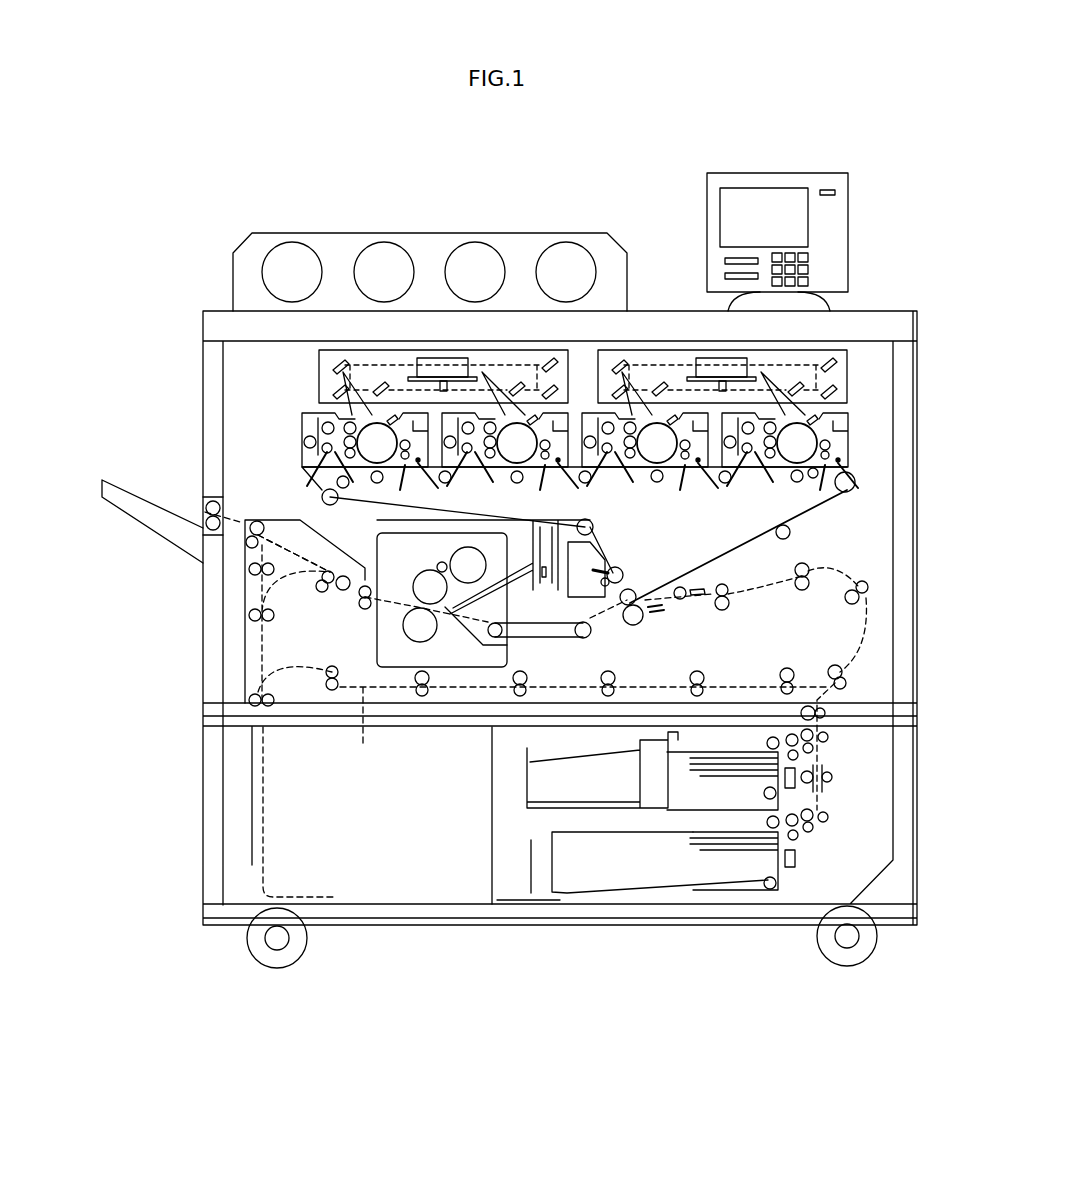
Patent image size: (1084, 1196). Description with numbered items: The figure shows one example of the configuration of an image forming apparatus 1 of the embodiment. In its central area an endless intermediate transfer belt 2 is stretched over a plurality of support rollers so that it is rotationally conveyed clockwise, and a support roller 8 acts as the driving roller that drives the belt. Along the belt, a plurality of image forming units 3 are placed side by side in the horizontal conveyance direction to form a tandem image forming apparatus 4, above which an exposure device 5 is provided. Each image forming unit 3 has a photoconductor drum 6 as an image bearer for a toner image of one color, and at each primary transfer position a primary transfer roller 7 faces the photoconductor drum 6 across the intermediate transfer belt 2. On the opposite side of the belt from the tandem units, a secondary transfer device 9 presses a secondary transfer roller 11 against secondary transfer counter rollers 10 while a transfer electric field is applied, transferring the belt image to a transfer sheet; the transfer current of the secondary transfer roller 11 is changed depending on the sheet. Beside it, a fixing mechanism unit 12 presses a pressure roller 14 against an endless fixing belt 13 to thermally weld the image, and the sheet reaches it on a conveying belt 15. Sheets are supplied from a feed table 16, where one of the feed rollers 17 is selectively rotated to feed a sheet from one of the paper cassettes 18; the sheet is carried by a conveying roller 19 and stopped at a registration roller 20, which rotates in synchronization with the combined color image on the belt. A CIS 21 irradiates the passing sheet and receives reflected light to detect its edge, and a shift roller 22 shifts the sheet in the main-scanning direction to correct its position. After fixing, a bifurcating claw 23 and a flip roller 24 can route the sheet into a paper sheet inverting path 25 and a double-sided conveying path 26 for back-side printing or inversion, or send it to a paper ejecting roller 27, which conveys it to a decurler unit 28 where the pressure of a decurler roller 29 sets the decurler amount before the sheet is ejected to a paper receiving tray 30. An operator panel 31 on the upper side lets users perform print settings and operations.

The image forming apparatus 1 is at (517, 233).
The intermediate transfer belt 2 is at (688, 574).
The image forming unit 3 is at (292, 430).
The tandem image forming apparatus 4 is at (860, 400).
The exposure device 5 is at (312, 370).
The photoconductor drum 6 is at (382, 482).
The primary transfer roller 7 is at (358, 499).
The support roller 8 is at (848, 493).
The secondary transfer device 9 is at (655, 624).
The secondary transfer counter roller 10 is at (620, 575).
The secondary transfer roller 11 is at (634, 626).
The fixing mechanism unit 12 is at (368, 640).
The fixing belt 13 is at (491, 566).
The pressure roller 14 is at (414, 592).
The conveying belt 15 is at (547, 637).
The feed table 16 is at (495, 887).
The feed roller 17 is at (770, 818).
The paper cassette 18 is at (532, 863).
The conveying roller 19 is at (828, 816).
The registration roller 20 is at (726, 609).
The CIS 21 is at (699, 598).
The shift roller 22 is at (680, 600).
The bifurcating claw 23 is at (293, 560).
The flip roller 24 is at (255, 608).
The paper sheet inverting path 25 is at (268, 668).
The double-sided conveying path 26 is at (312, 795).
The paper ejecting roller 27 is at (256, 520).
The decurler unit 28 is at (213, 497).
The decurler roller 29 is at (204, 499).
The paper receiving tray 30 is at (135, 488).
The operator panel 31 is at (816, 173).